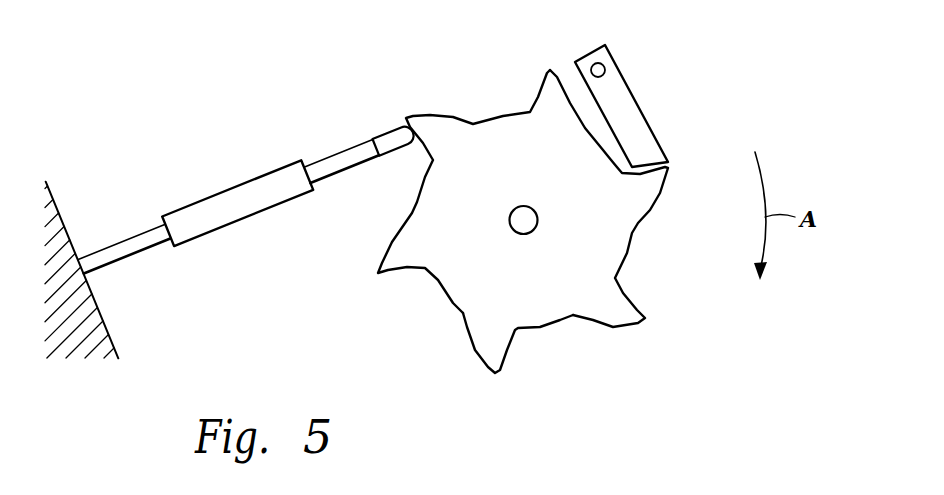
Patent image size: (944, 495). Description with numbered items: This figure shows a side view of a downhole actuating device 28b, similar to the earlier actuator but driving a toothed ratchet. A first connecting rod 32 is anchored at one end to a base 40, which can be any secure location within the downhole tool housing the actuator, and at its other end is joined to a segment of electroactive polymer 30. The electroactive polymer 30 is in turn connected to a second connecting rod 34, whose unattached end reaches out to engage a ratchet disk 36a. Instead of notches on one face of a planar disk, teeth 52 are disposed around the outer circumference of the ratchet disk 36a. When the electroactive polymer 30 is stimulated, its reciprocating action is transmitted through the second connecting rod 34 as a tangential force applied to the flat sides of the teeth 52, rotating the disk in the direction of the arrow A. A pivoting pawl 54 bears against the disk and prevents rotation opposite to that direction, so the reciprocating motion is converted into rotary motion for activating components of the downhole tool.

The downhole actuating device 28b is at (582, 207).
The electroactive polymer 30 is at (233, 194).
The first connecting rod 32 is at (125, 246).
The second connecting rod 34 is at (342, 162).
The ratchet disk 36a is at (628, 262).
The base 40 is at (103, 320).
The teeth 52 is at (488, 348).
The pivoting pawl 54 is at (643, 145).